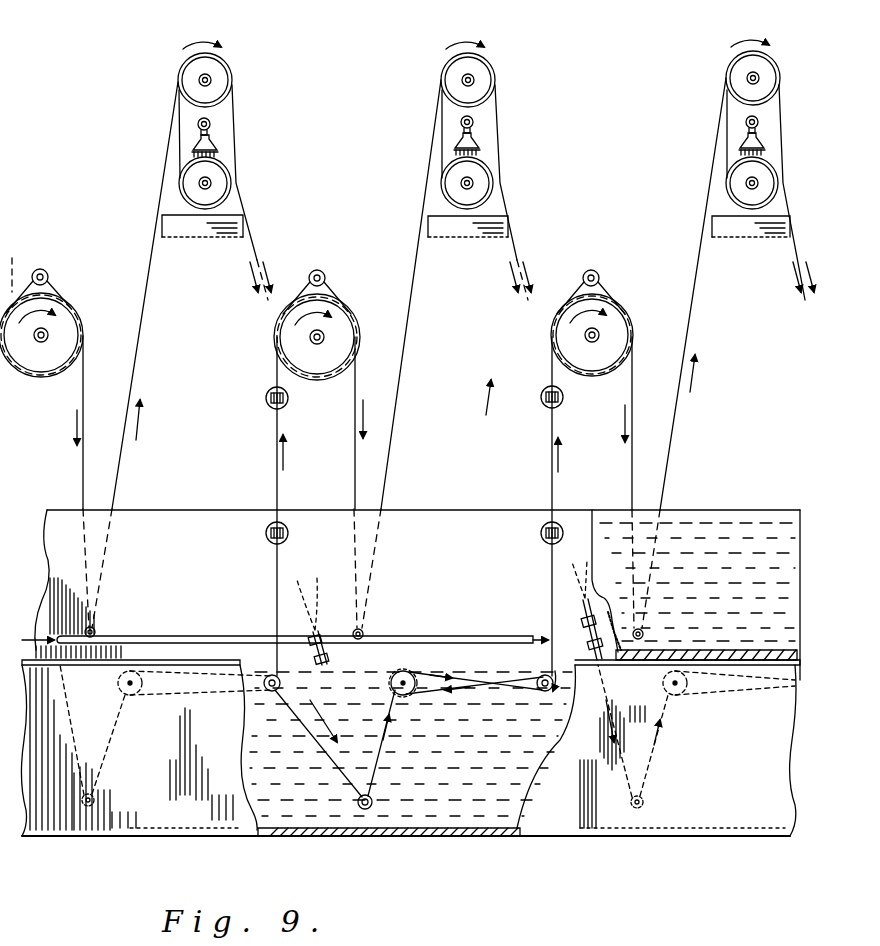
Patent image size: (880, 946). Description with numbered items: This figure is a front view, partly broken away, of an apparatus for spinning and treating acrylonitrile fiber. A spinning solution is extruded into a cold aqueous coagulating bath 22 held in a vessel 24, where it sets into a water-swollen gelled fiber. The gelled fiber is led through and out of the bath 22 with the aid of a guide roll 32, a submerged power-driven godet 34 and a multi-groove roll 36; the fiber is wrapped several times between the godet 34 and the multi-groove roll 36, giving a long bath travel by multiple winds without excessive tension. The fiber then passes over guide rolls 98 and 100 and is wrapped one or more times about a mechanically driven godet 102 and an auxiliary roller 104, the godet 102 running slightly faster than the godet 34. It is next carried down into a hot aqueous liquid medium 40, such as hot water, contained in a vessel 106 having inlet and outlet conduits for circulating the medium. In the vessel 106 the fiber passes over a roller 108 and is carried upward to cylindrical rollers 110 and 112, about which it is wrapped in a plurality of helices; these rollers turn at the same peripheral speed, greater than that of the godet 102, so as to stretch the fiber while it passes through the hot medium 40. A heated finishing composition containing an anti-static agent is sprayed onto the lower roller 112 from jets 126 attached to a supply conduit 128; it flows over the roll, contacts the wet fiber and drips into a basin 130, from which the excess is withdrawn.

The cold aqueous coagulating bath 22 is at (470, 822).
The vessel 24 is at (685, 748).
The guide roll 32 is at (96, 801).
The power-driven godet 34 is at (133, 695).
The multi-groove roll 36 is at (278, 690).
The hot aqueous liquid medium 40 is at (714, 522).
The guide roll 98 is at (266, 535).
The guide roll 100 is at (267, 402).
The mechanically driven godet 102 is at (67, 320).
The auxiliary roller 104 is at (49, 276).
The vessel 106 is at (770, 664).
The roller 108 is at (97, 628).
The cylindrical roller 110 is at (188, 75).
The cylindrical roller 112 is at (222, 182).
The jets 126 is at (218, 149).
The supply conduit 128 is at (197, 124).
The basin 130 is at (162, 235).